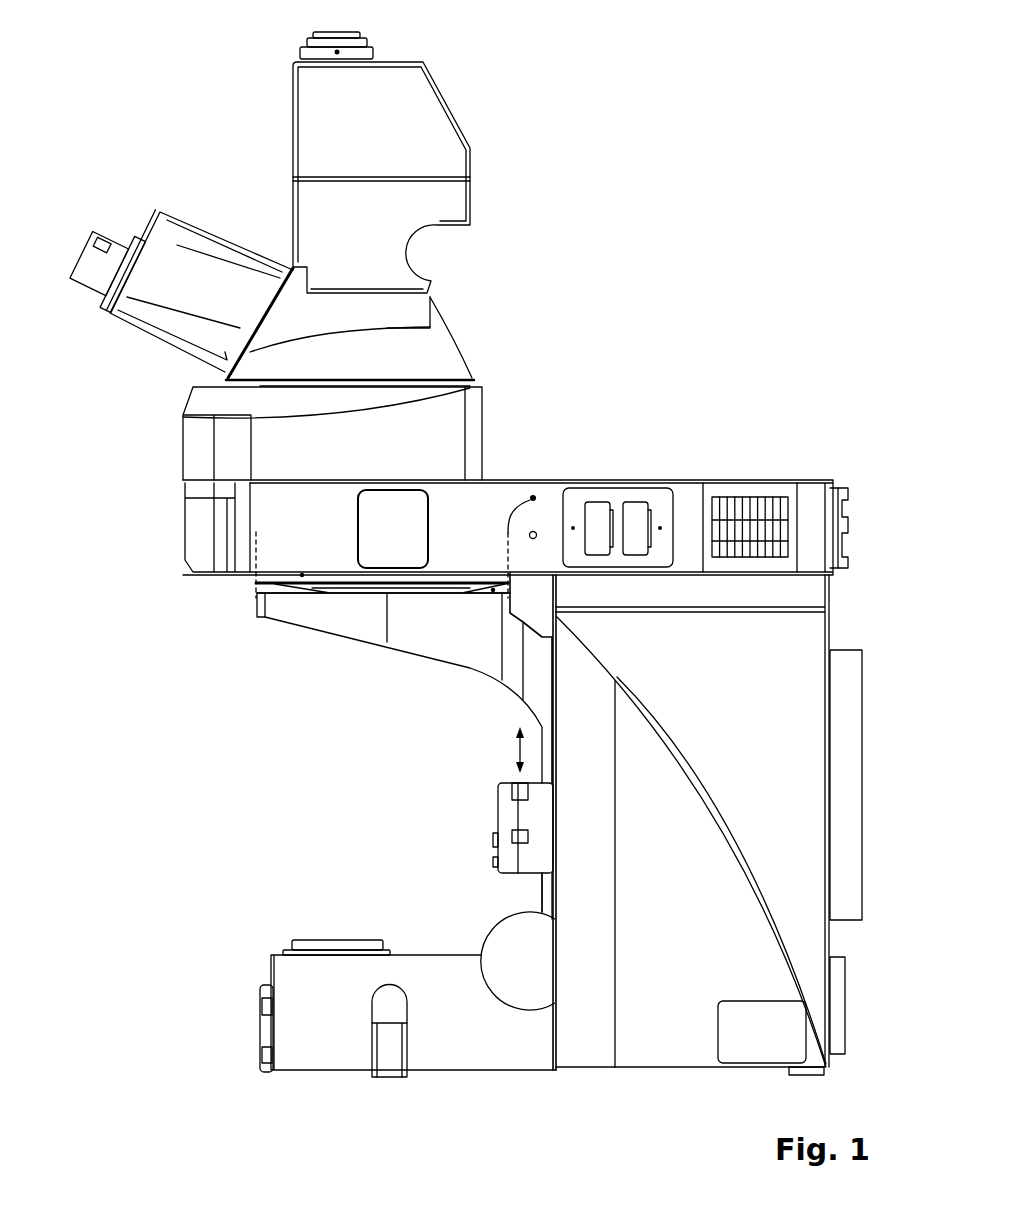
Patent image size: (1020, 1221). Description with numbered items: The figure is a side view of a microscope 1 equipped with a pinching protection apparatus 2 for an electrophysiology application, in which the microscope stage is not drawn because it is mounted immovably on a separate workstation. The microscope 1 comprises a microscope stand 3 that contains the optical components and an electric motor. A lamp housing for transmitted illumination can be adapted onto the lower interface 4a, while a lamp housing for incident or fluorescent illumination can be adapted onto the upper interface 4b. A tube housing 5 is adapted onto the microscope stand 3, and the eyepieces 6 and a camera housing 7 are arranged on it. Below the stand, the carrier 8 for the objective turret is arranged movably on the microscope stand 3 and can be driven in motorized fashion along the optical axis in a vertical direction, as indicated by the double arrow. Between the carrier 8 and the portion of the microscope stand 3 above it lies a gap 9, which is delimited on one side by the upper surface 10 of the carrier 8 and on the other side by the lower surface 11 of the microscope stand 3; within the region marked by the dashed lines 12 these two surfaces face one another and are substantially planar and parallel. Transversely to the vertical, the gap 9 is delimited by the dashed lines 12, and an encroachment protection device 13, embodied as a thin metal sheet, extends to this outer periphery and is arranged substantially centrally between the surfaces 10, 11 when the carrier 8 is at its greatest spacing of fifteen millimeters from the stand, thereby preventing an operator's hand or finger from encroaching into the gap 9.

The microscope 1 is at (668, 433).
The pinching protection apparatus 2 is at (193, 585).
The microscope stand 3 is at (285, 516).
The lower interface 4a is at (840, 1046).
The upper interface 4b is at (842, 484).
The tube housing 5 is at (430, 440).
The eyepieces 6 is at (100, 235).
The camera housing 7 is at (427, 131).
The carrier 8 is at (452, 640).
The gap 9 is at (267, 589).
The upper surface 10 is at (493, 588).
The lower surface 11 is at (262, 598).
The dashed lines 12 is at (258, 556).
The encroachment protection device 13 is at (410, 587).